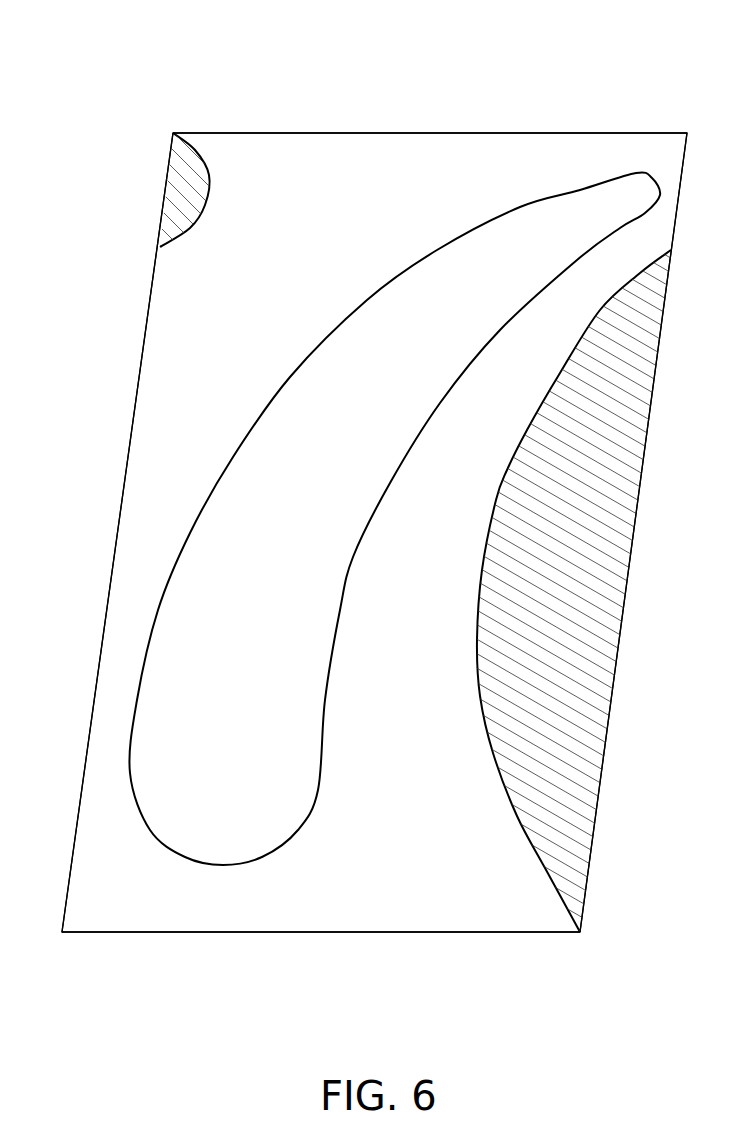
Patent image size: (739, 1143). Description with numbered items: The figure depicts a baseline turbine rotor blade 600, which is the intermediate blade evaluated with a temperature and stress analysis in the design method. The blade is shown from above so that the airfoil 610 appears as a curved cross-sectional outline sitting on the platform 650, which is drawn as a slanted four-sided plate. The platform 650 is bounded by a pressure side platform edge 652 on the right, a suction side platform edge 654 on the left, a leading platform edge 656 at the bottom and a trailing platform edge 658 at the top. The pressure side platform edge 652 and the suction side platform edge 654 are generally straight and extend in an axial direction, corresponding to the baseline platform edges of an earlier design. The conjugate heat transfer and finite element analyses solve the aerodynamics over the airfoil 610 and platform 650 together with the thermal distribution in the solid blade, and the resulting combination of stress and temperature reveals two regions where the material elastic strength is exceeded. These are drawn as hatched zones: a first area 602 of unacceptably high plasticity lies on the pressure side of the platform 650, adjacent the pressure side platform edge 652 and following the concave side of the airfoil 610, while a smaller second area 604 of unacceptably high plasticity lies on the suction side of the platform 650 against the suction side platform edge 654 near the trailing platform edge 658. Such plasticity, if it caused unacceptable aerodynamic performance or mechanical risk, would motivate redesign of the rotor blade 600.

The baseline turbine rotor blade 600 is at (387, 537).
The first area of unacceptably high plasticity 602 is at (596, 649).
The second area of unacceptably high plasticity 604 is at (182, 195).
The airfoil 610 is at (367, 302).
The platform 650 is at (340, 153).
The pressure side platform edge 652 is at (631, 554).
The suction side platform edge 654 is at (142, 358).
The leading platform edge 656 is at (335, 933).
The trailing platform edge 658 is at (443, 133).